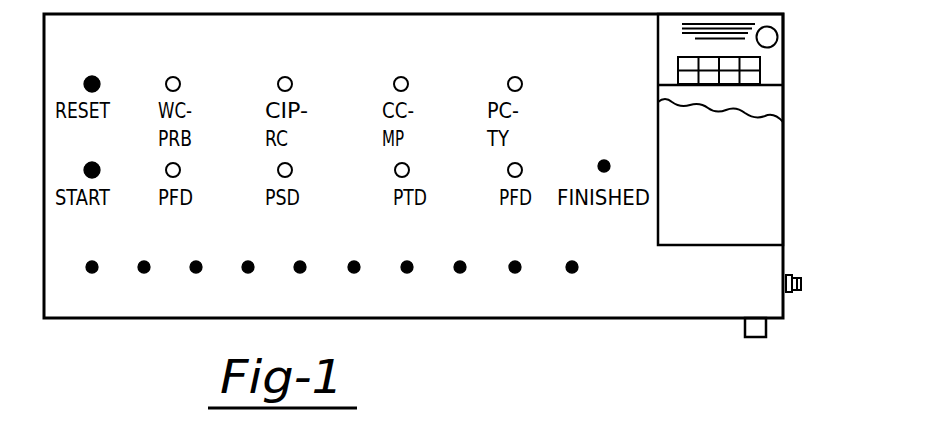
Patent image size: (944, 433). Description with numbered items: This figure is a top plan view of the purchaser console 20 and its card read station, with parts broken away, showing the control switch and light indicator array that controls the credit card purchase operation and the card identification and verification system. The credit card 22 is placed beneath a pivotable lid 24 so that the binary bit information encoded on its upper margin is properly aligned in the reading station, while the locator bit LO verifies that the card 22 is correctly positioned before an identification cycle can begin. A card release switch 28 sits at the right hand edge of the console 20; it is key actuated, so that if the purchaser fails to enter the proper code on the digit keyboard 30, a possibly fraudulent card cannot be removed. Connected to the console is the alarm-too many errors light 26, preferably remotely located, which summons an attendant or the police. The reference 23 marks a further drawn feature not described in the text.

The purchaser console 20 is at (470, 319).
The credit card 22 is at (668, 59).
The display 23 is at (673, 76).
The pivotable lid 24 is at (667, 127).
The alarm-too many errors light 26 is at (745, 333).
The card release switch 28 is at (801, 283).
The digit keyboard 30 is at (192, 268).